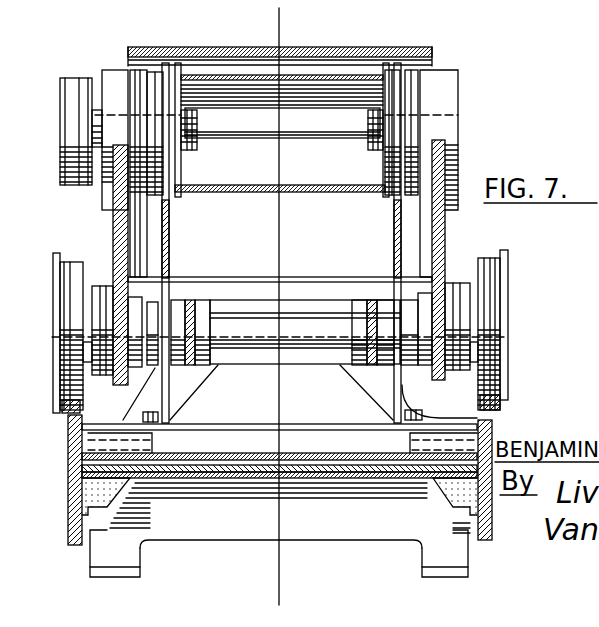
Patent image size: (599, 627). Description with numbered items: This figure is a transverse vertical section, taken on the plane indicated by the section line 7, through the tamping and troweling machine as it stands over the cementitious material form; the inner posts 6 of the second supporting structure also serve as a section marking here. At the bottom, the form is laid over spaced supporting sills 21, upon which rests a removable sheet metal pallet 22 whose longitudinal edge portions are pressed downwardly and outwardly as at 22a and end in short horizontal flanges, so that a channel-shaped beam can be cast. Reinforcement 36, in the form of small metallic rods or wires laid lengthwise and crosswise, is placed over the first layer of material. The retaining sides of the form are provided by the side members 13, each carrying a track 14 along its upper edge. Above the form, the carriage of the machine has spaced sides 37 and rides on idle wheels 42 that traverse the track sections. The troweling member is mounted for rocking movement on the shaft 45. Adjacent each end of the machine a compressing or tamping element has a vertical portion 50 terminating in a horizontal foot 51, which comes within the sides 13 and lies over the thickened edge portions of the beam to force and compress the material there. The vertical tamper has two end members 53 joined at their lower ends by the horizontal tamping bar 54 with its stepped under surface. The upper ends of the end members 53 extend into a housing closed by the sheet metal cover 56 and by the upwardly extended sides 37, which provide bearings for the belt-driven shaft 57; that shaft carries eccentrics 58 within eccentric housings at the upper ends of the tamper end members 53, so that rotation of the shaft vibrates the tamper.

The inner posts 6 is at (292, 40).
The section line 7 is at (340, 5).
The form side members 13 is at (72, 488).
The track 14 is at (72, 412).
The supporting sills 21 is at (207, 525).
The sheet metal pallet 22 is at (313, 470).
The pressed edge portion of pallet 22a is at (110, 510).
The reinforcement 36 is at (180, 462).
The carriage frame sides 37 is at (120, 255).
The idle wheels 42 is at (60, 322).
The shaft 45 is at (313, 333).
The vertical portion of tamping element 50 is at (193, 382).
The horizontal foot 51 is at (88, 462).
The tamper end members 53 is at (168, 258).
The horizontal tamping bar 54 is at (237, 443).
The cover 56 is at (372, 47).
The shaft 57 is at (311, 138).
The eccentrics 58 is at (186, 165).